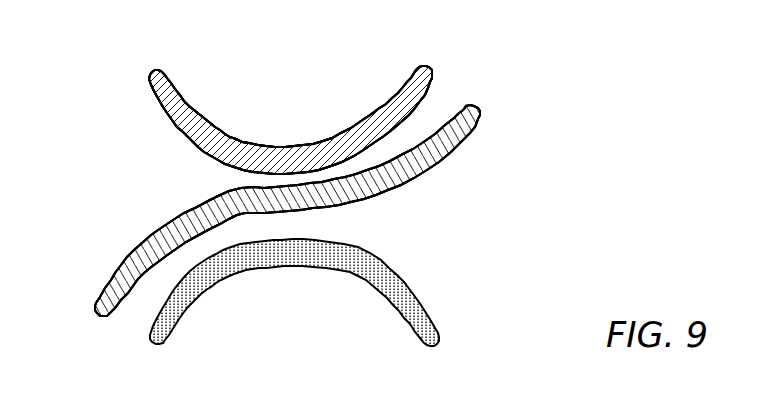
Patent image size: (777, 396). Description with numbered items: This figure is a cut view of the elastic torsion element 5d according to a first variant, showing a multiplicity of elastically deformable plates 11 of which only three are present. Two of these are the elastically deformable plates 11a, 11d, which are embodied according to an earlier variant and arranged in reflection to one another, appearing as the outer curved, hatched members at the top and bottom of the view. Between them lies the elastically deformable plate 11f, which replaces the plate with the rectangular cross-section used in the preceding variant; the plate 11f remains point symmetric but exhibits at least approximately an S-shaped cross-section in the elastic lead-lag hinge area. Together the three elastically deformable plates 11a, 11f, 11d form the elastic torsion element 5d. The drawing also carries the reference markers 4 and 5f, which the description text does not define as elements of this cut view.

The pad 4 is at (287, 136).
The elastic torsion element 5d is at (198, 61).
The second blade 5f is at (291, 202).
The elastically deformable plates 11 is at (463, 65).
The elastically deformable plate 11a is at (146, 84).
The elastically deformable plate 11f is at (112, 270).
The elastically deformable plate 11d is at (432, 312).